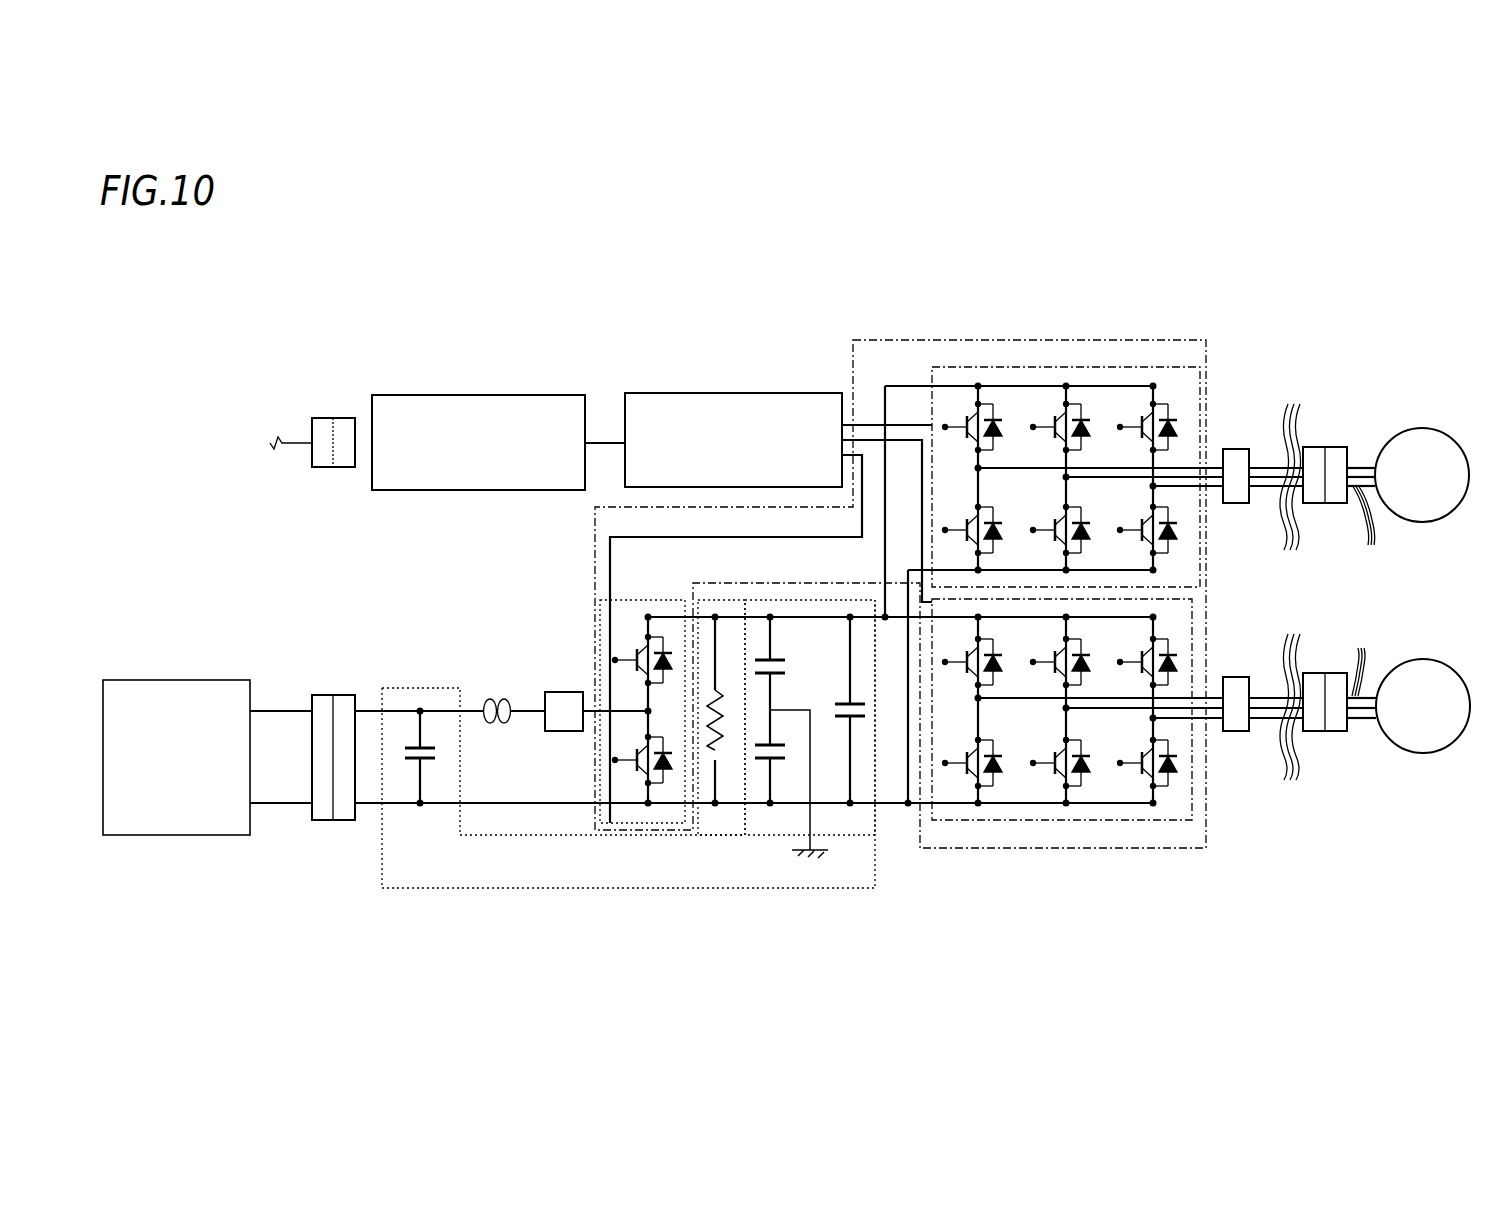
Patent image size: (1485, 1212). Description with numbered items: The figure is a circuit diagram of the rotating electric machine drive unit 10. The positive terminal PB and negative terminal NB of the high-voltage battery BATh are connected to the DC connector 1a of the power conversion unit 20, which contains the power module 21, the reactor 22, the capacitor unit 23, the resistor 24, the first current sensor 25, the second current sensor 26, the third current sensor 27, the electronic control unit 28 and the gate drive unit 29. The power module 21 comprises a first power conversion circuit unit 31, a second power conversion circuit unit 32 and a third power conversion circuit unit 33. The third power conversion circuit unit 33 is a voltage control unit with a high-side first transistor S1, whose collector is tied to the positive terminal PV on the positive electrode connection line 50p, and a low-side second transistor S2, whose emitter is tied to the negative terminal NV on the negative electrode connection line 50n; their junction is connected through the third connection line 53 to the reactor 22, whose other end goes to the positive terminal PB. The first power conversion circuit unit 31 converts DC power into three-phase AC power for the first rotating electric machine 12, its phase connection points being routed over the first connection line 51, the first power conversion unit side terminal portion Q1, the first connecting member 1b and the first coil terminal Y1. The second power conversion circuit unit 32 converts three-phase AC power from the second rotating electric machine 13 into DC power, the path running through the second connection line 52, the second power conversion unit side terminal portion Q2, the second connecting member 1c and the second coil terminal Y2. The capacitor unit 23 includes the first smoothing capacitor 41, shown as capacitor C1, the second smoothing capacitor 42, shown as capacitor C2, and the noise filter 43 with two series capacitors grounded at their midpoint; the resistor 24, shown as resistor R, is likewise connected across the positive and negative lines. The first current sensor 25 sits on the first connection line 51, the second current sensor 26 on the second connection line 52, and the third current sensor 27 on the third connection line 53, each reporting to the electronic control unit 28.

The rotating electric machine drive unit 10 is at (1216, 222).
The power conversion unit 20 is at (1117, 222).
The power module 21 is at (1194, 340).
The first power conversion circuit unit 31 is at (1205, 372).
The second power conversion circuit unit 32 is at (1196, 658).
The third power conversion circuit unit 33 is at (615, 746).
The reactor 22 is at (492, 700).
The capacitor unit 23 is at (628, 775).
The resistor 24 is at (726, 777).
The first current sensor 25 is at (1236, 449).
The second current sensor 26 is at (1236, 731).
The third current sensor 27 is at (563, 692).
The electronic control unit 28 is at (480, 395).
The gate drive unit 29 is at (736, 393).
The first smoothing capacitor 41 is at (413, 829).
The second smoothing capacitor 42 is at (840, 784).
The noise filter 43 is at (780, 680).
The first connection line 51 is at (1290, 475).
The second connection line 52 is at (1292, 703).
The third connection line 53 is at (596, 722).
The first rotating electric machine 12 is at (1418, 428).
The second rotating electric machine 13 is at (1419, 659).
The DC connector 1a is at (325, 695).
The first connecting member 1b is at (1328, 447).
The second connecting member 1c is at (1330, 731).
The positive electrode connection line 50p is at (887, 630).
The negative electrode connection line 50n is at (905, 815).
The first transistor S1 is at (645, 672).
The second transistor S2 is at (636, 775).
The positive terminal PV is at (650, 610).
The negative terminal NV is at (655, 792).
The positive terminal PB is at (312, 712).
The negative terminal NB is at (312, 812).
The high-voltage battery BATh is at (181, 680).
The capacitor C1 is at (418, 762).
The capacitor C2 is at (832, 691).
The resistor R is at (725, 676).
The first power conversion unit side terminal portion Q1 is at (1290, 491).
The second power conversion unit side terminal portion Q2 is at (1292, 689).
The first coil terminal Y1 is at (1369, 525).
The second coil terminal Y2 is at (1364, 659).